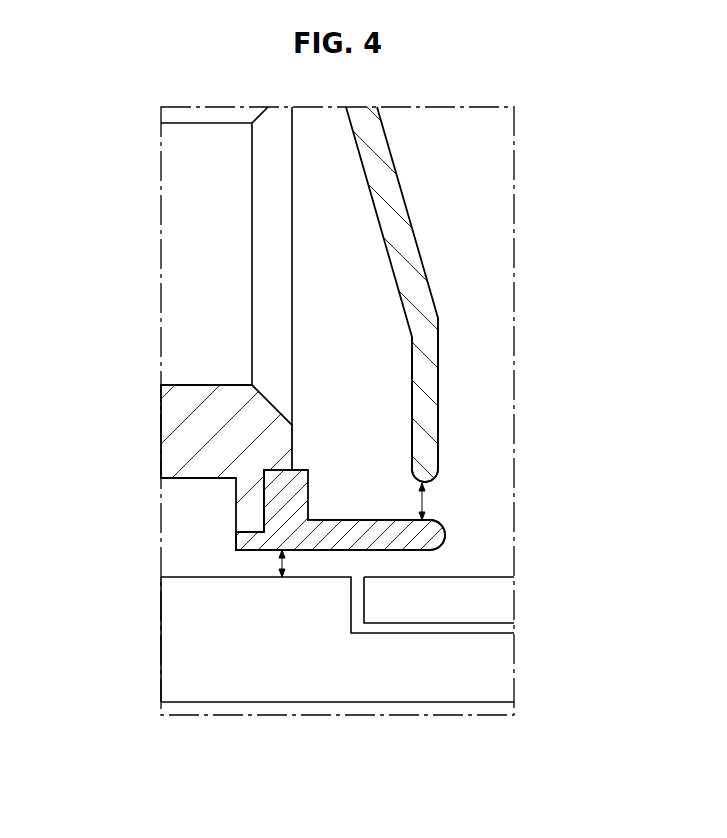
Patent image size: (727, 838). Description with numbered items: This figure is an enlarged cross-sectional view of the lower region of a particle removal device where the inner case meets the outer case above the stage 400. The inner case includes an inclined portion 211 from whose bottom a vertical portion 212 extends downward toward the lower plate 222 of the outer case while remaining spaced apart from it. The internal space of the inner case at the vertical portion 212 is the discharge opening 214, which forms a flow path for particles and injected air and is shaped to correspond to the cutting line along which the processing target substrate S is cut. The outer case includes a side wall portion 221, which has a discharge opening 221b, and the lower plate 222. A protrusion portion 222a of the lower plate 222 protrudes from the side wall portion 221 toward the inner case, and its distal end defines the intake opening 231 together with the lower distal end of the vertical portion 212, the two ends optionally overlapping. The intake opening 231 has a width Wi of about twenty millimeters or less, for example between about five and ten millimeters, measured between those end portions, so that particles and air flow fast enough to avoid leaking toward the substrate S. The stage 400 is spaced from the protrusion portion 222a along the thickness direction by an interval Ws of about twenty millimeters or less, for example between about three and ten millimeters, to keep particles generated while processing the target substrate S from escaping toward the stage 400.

The inclined portion 211 is at (402, 225).
The vertical portion 212 is at (423, 382).
The discharge opening 214 is at (482, 425).
The side wall portion 221 is at (210, 421).
The discharge opening 221b is at (196, 256).
The lower plate 222 is at (276, 523).
The protrusion portion 222a is at (332, 535).
The intake opening 231 is at (433, 500).
The processing target substrate S is at (500, 599).
The stage 400 is at (488, 672).
The width of the intake opening Wi is at (425, 500).
The interval between stage and protrusion portion Ws is at (280, 563).